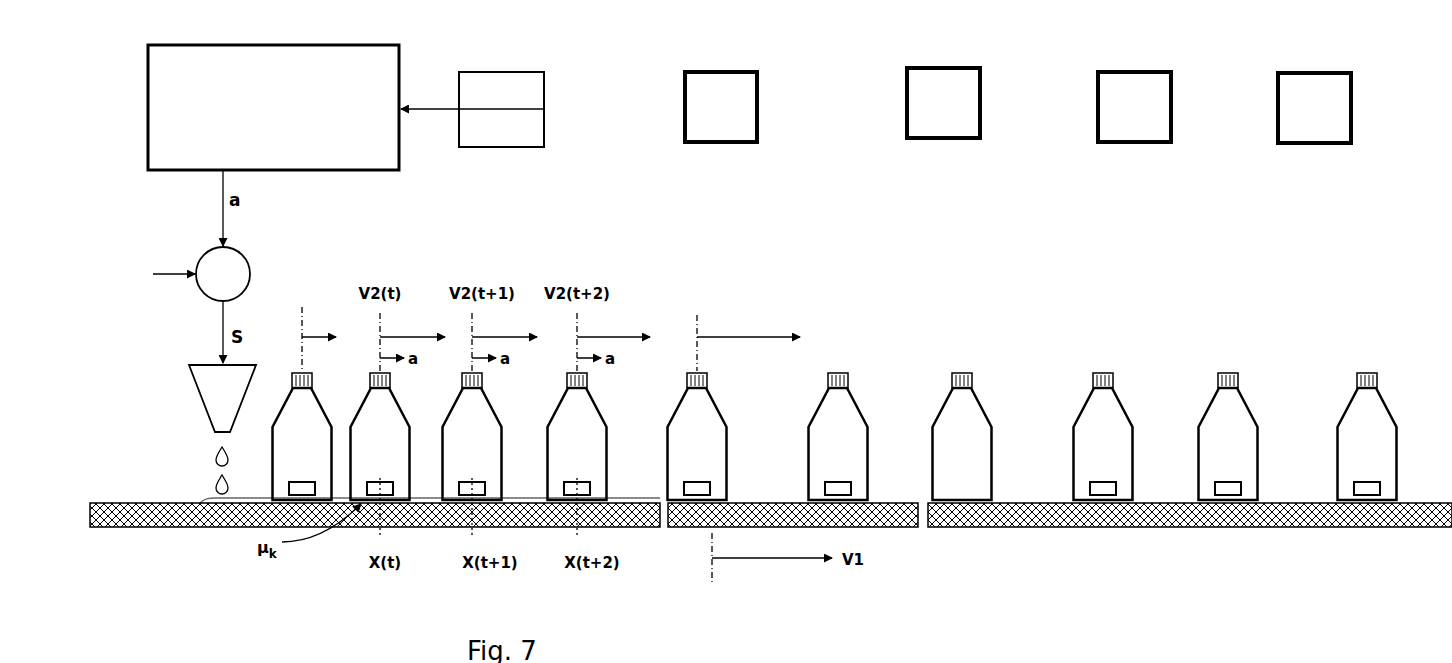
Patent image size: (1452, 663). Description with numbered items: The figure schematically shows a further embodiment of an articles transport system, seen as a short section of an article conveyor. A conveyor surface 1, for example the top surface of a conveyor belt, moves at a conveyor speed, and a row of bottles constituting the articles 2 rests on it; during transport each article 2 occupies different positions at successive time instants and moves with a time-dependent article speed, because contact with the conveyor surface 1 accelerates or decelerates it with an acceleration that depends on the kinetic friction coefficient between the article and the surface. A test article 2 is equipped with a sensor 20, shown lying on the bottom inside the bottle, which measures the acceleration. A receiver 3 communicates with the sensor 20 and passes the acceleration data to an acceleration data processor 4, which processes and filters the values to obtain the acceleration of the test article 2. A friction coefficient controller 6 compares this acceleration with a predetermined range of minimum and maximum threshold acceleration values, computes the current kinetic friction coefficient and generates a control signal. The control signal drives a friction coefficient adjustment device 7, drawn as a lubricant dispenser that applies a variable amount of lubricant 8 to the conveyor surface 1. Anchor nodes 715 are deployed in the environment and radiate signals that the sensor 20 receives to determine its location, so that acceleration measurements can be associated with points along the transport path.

The conveyor surface 1 is at (160, 499).
The article 2 is at (835, 436).
The receiver 3 is at (472, 109).
The acceleration data processor 4 is at (273, 107).
The friction coefficient controller 6 is at (161, 269).
The friction coefficient adjustment device 7 is at (222, 398).
The lubricant 8 is at (250, 499).
The sensor 20 is at (295, 490).
The anchor nodes 715 is at (1018, 105).